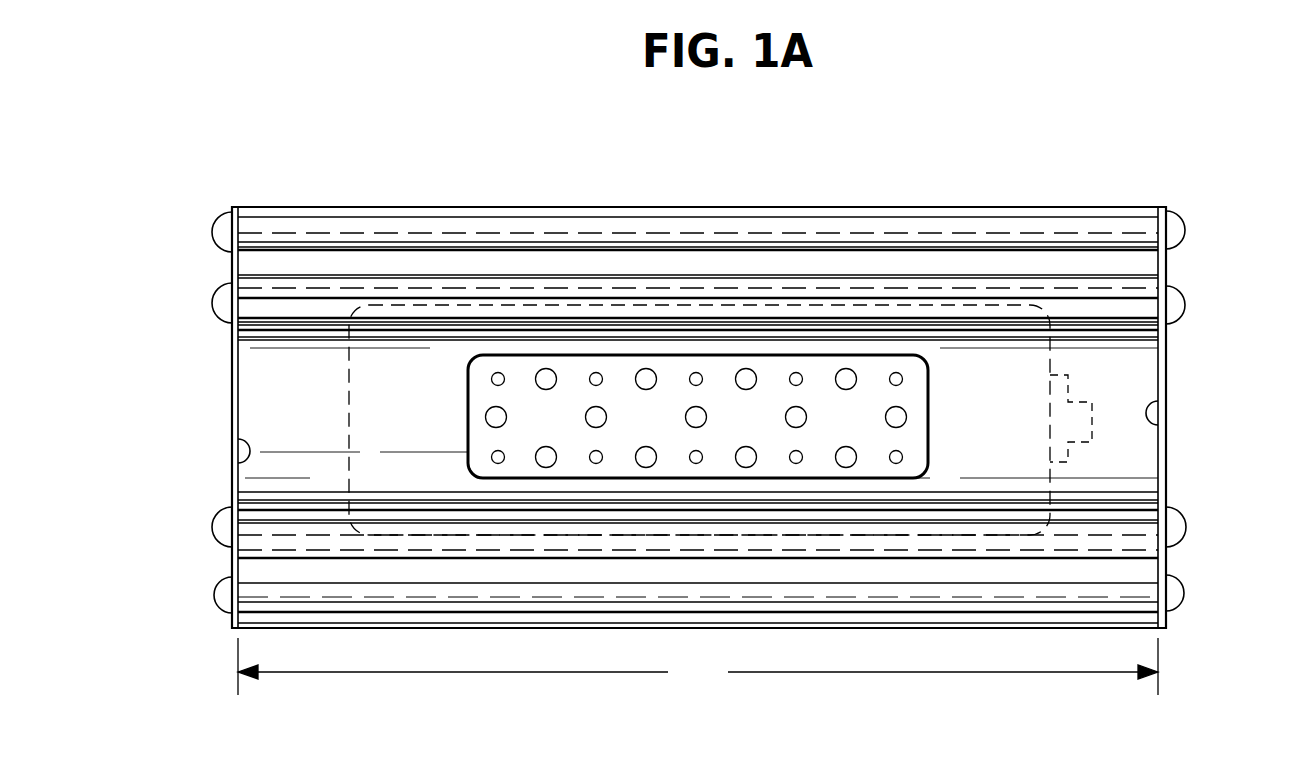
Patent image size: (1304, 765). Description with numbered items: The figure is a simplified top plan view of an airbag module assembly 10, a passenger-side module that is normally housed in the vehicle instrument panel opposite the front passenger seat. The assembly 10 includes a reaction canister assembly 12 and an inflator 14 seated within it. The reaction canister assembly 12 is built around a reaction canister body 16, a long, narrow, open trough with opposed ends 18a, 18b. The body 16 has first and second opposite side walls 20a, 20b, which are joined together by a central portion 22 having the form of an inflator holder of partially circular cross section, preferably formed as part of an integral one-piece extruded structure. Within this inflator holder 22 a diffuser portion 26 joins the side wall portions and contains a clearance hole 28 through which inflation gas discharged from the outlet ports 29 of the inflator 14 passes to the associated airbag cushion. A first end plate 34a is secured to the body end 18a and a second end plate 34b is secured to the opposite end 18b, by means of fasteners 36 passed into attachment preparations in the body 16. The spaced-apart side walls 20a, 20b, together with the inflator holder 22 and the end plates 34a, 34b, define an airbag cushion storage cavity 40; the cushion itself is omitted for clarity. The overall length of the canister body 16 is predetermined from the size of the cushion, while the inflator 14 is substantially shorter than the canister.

The airbag module assembly 10 is at (160, 360).
The reaction canister assembly 12 is at (1166, 381).
The inflator 14 is at (468, 382).
The reaction canister body 16 is at (1140, 458).
The end 18a is at (236, 451).
The end 18b is at (1158, 415).
The first side wall 20a is at (1145, 594).
The second side wall 20b is at (1145, 230).
The central portion inflator holder 22 is at (993, 375).
The diffuser portion 26 is at (352, 398).
The clearance hole 28 is at (468, 462).
The outlet ports 29 is at (535, 376).
The first end plate 34a is at (232, 562).
The second end plate 34b is at (1168, 485).
The fasteners 36 is at (222, 598).
The airbag cushion storage cavity 40 is at (257, 364).